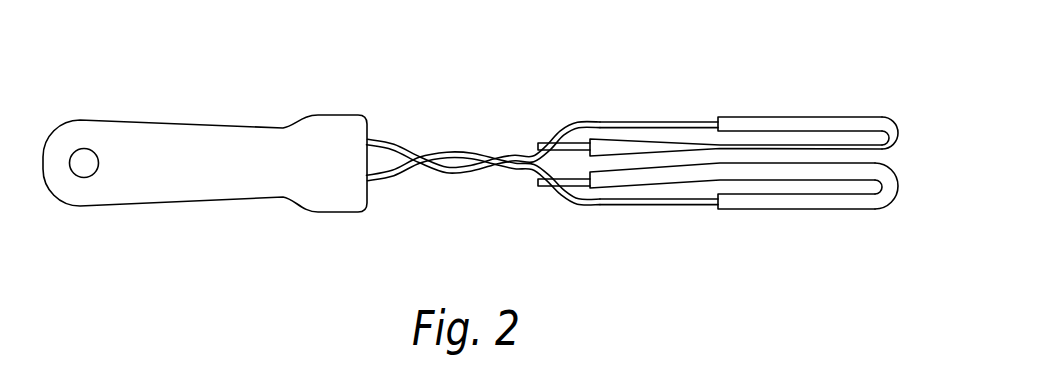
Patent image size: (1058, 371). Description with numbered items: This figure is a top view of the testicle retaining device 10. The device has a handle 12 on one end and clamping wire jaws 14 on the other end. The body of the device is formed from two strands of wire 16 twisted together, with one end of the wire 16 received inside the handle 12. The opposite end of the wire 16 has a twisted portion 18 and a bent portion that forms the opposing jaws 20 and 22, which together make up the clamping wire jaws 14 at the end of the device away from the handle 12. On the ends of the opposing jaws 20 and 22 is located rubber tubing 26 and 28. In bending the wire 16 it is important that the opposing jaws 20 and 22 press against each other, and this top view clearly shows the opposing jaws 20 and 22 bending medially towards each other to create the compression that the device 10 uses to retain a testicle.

The testicle retaining device 10 is at (443, 87).
The handle 12 is at (177, 206).
The clamping wire jaws 14 is at (898, 115).
The wire 16 is at (391, 179).
The twisted portion 18 is at (477, 155).
The opposing jaw 20 is at (797, 117).
The opposing jaw 22 is at (797, 208).
The rubber tubing 26 is at (718, 120).
The rubber tubing 28 is at (719, 208).